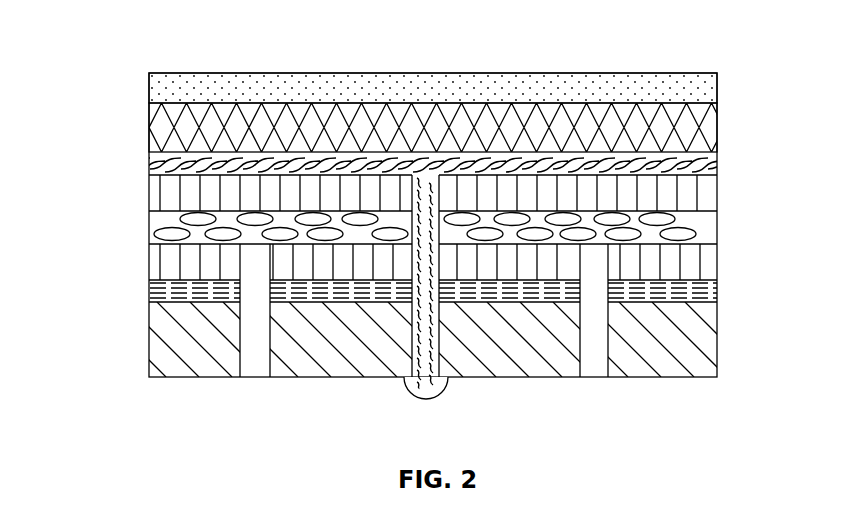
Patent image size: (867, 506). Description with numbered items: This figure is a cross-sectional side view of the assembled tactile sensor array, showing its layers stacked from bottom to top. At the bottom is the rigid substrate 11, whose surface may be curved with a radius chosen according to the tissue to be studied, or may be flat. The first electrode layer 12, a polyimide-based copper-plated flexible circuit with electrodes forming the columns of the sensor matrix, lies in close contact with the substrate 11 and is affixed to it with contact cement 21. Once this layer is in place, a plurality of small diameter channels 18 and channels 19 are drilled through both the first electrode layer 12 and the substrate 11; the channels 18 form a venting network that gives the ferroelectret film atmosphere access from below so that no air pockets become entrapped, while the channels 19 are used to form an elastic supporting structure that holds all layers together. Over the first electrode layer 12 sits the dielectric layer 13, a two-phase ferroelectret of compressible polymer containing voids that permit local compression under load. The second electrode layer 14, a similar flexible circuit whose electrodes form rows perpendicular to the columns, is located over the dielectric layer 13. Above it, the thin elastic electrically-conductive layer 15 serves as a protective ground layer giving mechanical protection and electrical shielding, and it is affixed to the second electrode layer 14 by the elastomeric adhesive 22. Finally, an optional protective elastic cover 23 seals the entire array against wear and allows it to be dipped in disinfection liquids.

The rigid substrate 11 is at (173, 362).
The first electrode layer 12 is at (168, 260).
The dielectric layer 13 is at (167, 222).
The second electrode layer 14 is at (167, 195).
The electrically-conductive layer 15 is at (149, 120).
The channels 18 is at (593, 350).
The channels 19 is at (447, 381).
The contact cement 21 is at (715, 285).
The elastomeric adhesive 22 is at (690, 163).
The protective elastic cover 23 is at (690, 88).